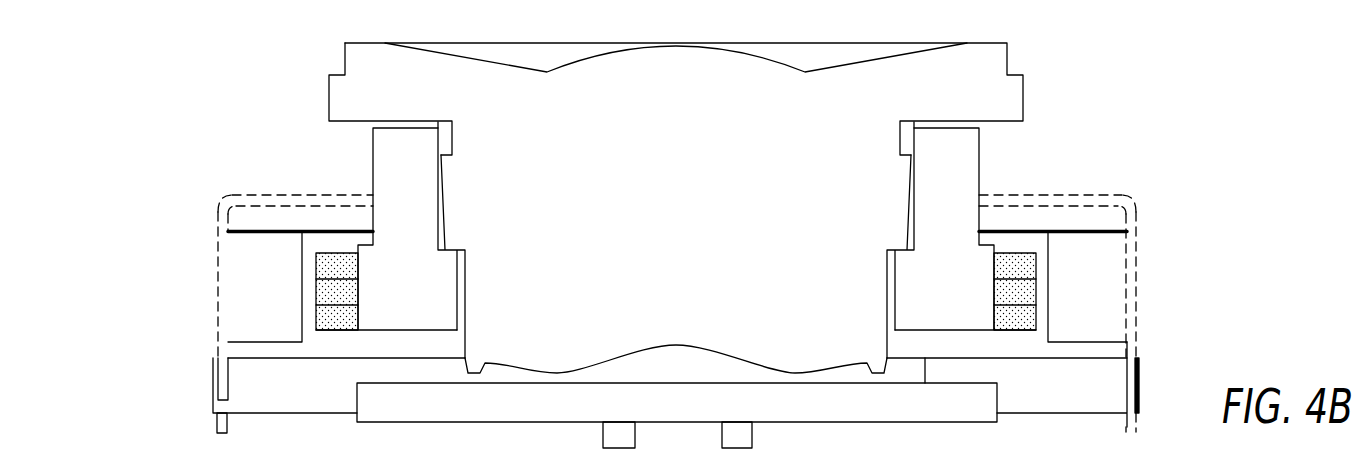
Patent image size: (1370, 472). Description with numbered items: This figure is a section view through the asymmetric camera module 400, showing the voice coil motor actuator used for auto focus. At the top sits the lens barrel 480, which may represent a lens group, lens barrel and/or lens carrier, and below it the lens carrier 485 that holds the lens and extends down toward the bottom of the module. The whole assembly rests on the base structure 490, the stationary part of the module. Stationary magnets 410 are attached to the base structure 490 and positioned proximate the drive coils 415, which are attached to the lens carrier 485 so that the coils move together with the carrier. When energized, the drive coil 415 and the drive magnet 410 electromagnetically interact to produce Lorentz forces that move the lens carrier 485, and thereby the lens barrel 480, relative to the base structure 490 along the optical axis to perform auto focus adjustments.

The asymmetric camera module 400 is at (1100, 89).
The stationary magnet 410 is at (240, 277).
The drive coil 415 is at (326, 258).
The lens barrel 480 is at (1023, 80).
The lens carrier 485 is at (967, 172).
The base structure 490 is at (498, 413).